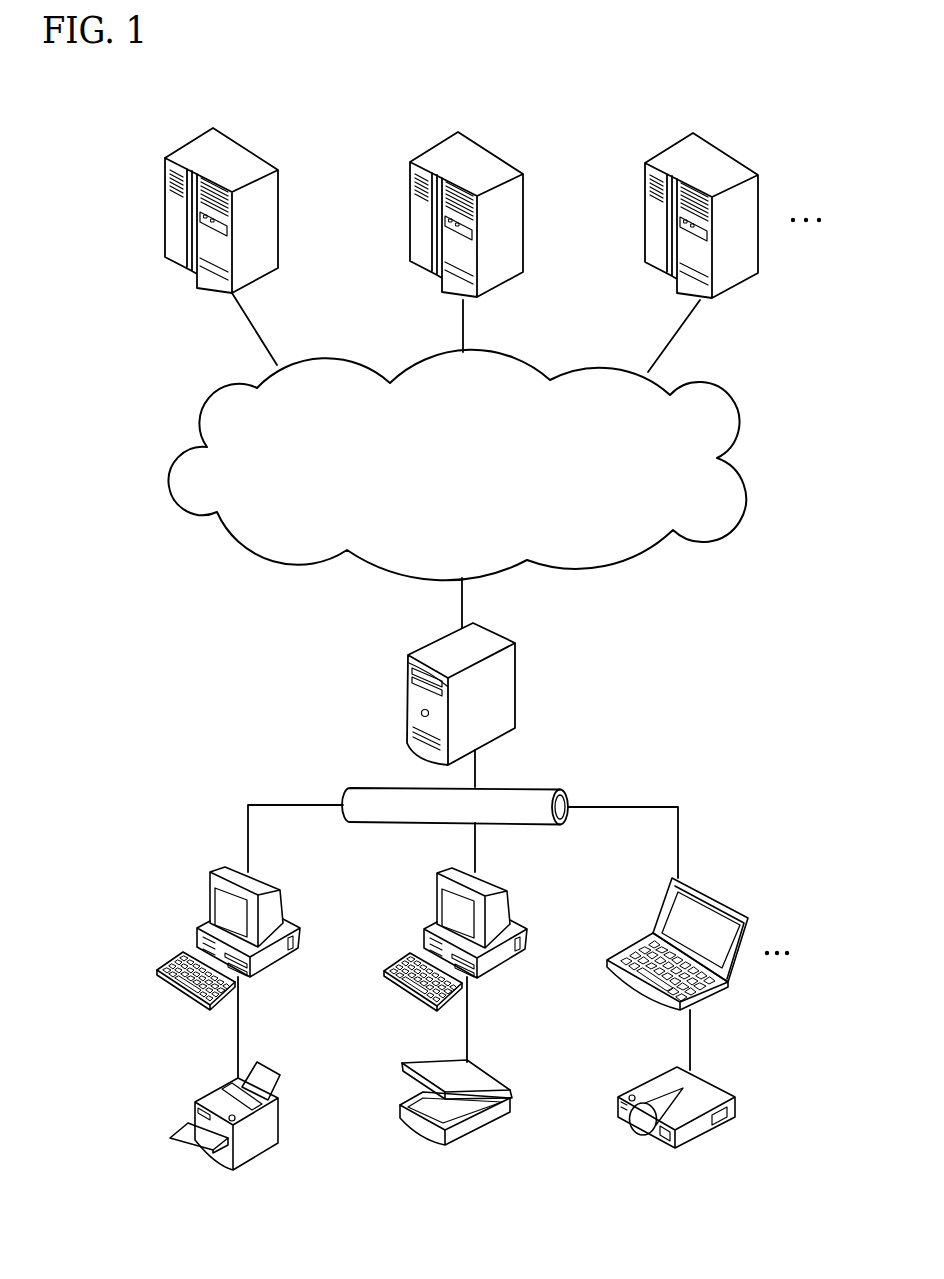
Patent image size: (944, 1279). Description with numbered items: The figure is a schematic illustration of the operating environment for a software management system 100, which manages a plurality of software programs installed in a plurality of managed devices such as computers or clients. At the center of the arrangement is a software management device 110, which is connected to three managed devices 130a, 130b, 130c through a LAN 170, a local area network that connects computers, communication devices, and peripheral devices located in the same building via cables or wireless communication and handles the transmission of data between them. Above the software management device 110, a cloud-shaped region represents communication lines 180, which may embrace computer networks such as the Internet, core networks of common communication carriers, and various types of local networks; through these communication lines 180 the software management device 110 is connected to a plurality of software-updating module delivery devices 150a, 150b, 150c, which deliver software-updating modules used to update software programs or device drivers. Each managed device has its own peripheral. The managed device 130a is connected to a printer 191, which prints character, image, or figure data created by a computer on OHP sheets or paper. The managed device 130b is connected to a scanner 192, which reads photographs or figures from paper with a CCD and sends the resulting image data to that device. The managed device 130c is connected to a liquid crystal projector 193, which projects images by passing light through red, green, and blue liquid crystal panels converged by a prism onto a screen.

The software management system 100 is at (492, 99).
The software management device 110 is at (515, 680).
The managed device 130a is at (282, 890).
The managed device 130b is at (510, 892).
The managed device 130c is at (703, 892).
The software-updating module delivery device 150a is at (280, 193).
The software-updating module delivery device 150b is at (523, 193).
The software-updating module delivery device 150c is at (762, 192).
The LAN 170 is at (522, 787).
The communication lines 180 is at (733, 402).
The printer 191 is at (278, 1073).
The scanner 192 is at (502, 1077).
The liquid crystal projector 193 is at (710, 1082).